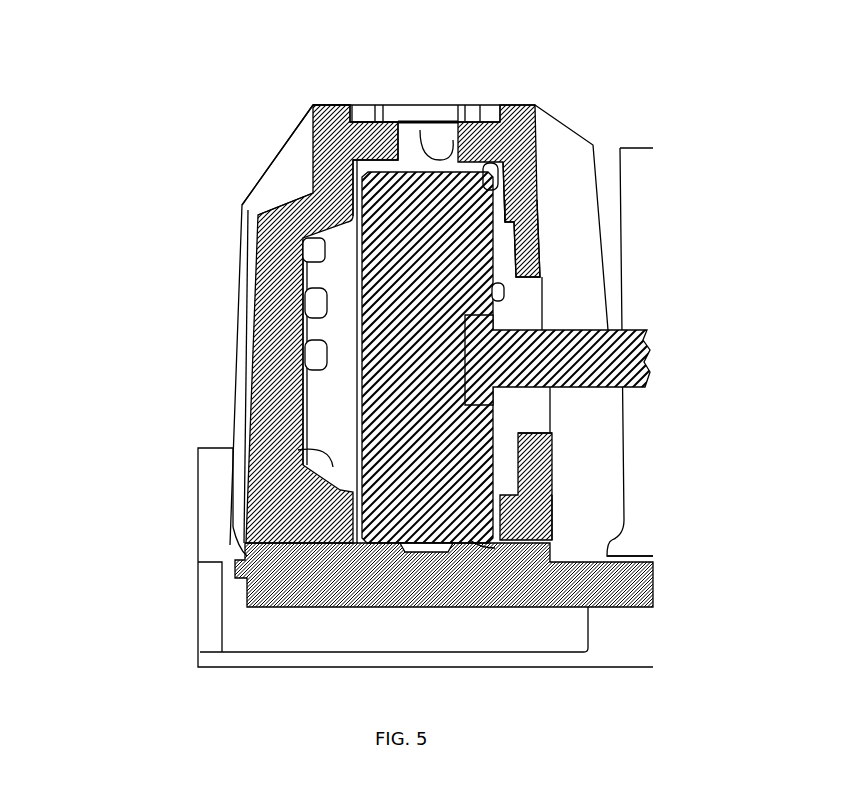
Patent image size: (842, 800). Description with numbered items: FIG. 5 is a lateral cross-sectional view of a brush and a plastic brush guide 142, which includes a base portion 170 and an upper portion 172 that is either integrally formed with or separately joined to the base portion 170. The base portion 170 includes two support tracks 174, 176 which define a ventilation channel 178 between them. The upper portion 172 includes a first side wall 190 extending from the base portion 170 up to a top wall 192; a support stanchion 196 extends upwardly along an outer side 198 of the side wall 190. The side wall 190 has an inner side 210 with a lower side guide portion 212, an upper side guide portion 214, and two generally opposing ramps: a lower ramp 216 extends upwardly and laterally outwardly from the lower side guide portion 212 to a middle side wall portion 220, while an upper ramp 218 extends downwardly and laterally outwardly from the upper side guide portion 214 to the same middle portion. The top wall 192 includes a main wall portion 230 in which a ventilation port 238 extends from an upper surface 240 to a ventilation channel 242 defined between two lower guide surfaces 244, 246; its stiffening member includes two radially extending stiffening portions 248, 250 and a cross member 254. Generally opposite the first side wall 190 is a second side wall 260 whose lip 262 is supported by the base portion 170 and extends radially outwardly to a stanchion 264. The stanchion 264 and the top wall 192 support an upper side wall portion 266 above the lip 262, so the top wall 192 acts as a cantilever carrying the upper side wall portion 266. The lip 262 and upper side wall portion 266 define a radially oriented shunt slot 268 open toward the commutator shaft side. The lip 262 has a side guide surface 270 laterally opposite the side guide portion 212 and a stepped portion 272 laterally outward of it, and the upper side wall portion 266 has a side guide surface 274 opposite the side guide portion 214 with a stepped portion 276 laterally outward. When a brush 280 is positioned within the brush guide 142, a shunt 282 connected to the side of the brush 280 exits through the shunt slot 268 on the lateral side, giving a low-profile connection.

The brush guide 142 is at (122, 152).
The base portion 170 is at (300, 607).
The upper portion 172 is at (175, 340).
The support track 174 is at (357, 440).
The support track 176 is at (548, 495).
The ventilation channel 178 is at (455, 545).
The first side wall 190 is at (258, 268).
The top wall 192 is at (458, 52).
The support stanchion 196 is at (275, 162).
The outer side 198 is at (235, 462).
The inner side 210 is at (300, 320).
The lower side guide portion 212 is at (392, 515).
The upper side guide portion 214 is at (368, 150).
The lower ramp 216 is at (232, 556).
The upper ramp 218 is at (258, 217).
The middle side wall portion 220 is at (303, 358).
The main wall portion 230 is at (365, 105).
The ventilation port 238 is at (432, 150).
The upper surface 240 is at (475, 122).
The ventilation channel 242 is at (445, 140).
The lower guide surface 244 is at (537, 232).
The lower guide surface 246 is at (500, 197).
The radially extending stiffening portion 248 is at (327, 103).
The radially extending stiffening portion 250 is at (500, 135).
The cross member 254 is at (398, 104).
The second side wall 260 is at (582, 147).
The lip 262 is at (615, 535).
The stanchion 264 is at (545, 106).
The upper side wall portion 266 is at (515, 213).
The shunt slot 268 is at (520, 435).
The side guide surface 270 is at (485, 553).
The stepped portion 272 is at (552, 510).
The side guide surface 274 is at (545, 165).
The stepped portion 276 is at (497, 295).
The brush 280 is at (357, 407).
The shunt 282 is at (590, 330).